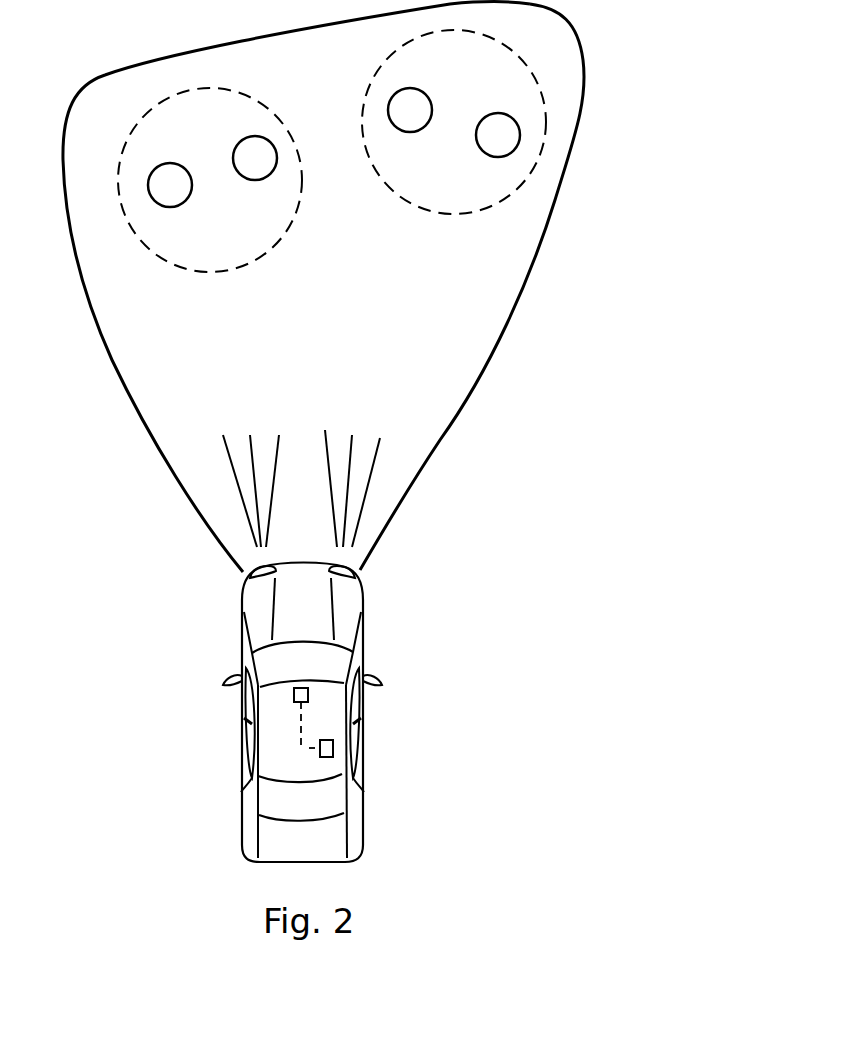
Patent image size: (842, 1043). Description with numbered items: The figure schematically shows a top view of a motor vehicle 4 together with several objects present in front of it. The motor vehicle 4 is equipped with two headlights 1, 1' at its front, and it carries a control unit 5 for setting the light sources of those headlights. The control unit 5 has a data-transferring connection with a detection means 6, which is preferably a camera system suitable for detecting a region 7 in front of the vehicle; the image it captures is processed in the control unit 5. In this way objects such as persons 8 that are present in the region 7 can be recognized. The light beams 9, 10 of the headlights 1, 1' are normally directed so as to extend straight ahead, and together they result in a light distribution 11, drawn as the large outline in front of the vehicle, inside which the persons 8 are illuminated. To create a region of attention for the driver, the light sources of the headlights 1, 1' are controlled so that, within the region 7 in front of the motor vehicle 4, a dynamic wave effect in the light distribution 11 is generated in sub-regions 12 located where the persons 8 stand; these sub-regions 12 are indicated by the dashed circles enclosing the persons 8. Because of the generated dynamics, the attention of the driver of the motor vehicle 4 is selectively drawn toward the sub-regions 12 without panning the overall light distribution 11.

The headlight 1 is at (272, 546).
The headlight 1' is at (333, 546).
The motor vehicle 4 is at (365, 742).
The control unit 5 is at (327, 757).
The detection means 6 is at (308, 693).
The region 7 is at (167, 363).
The persons 8 is at (252, 180).
The light beam 9 is at (243, 415).
The light beam 10 is at (352, 423).
The light distribution 11 is at (408, 482).
The sub-regions 12 is at (430, 210).